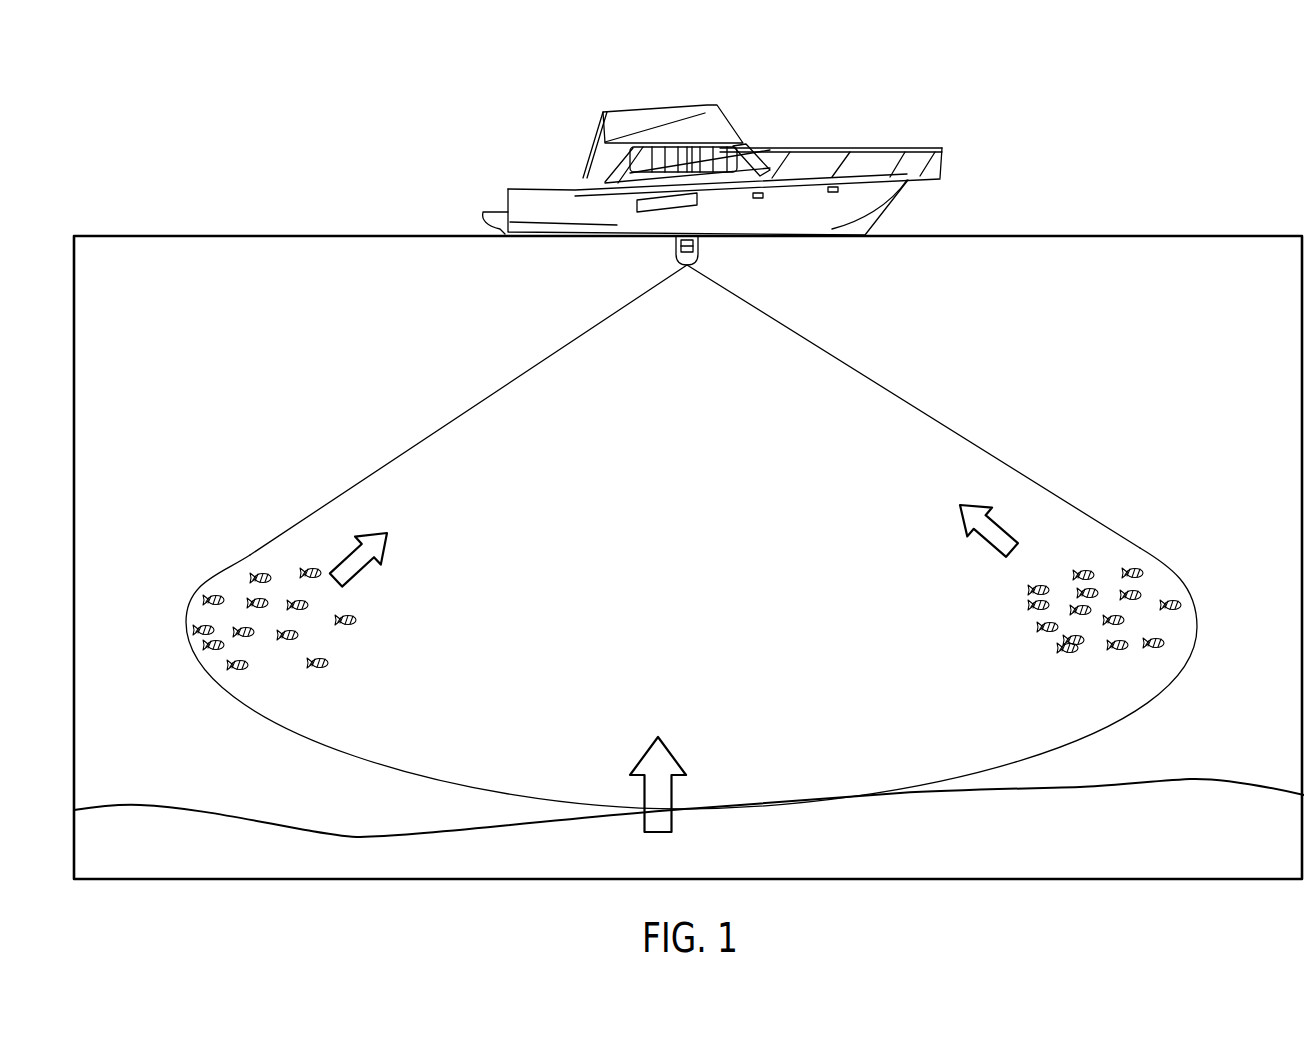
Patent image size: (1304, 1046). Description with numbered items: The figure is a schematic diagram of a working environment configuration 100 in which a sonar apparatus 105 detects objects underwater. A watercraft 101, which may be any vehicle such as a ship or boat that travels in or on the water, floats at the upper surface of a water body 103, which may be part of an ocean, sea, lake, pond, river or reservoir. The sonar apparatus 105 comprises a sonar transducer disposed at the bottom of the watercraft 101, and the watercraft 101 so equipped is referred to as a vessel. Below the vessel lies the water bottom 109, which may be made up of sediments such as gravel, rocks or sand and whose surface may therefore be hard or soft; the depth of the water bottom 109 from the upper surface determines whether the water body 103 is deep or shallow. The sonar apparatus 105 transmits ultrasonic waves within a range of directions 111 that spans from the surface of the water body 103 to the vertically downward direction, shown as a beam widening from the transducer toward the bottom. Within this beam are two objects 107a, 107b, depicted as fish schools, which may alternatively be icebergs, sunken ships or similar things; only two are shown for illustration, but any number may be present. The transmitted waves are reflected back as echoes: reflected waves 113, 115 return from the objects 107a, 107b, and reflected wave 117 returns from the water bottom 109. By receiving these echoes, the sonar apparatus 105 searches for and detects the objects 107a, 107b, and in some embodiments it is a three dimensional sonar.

The working environment configuration 100 is at (89, 74).
The watercraft 101 is at (935, 149).
The water body 103 is at (1242, 236).
The sonar apparatus 105 is at (698, 250).
The object 107a is at (257, 575).
The object 107b is at (1125, 570).
The water bottom 109 is at (1228, 780).
The range of directions 111 is at (878, 375).
The reflected wave 113 is at (363, 532).
The reflected wave 115 is at (1012, 537).
The reflected wave 117 is at (673, 752).